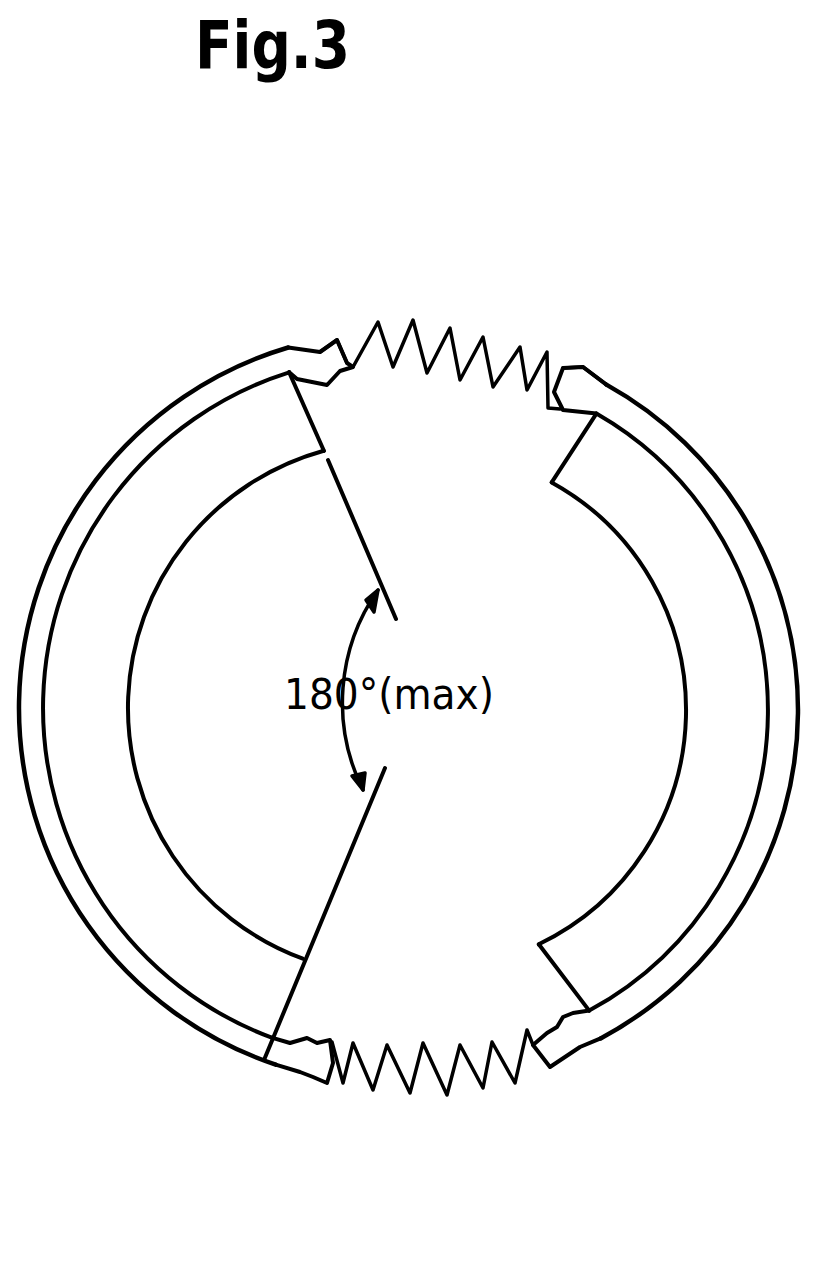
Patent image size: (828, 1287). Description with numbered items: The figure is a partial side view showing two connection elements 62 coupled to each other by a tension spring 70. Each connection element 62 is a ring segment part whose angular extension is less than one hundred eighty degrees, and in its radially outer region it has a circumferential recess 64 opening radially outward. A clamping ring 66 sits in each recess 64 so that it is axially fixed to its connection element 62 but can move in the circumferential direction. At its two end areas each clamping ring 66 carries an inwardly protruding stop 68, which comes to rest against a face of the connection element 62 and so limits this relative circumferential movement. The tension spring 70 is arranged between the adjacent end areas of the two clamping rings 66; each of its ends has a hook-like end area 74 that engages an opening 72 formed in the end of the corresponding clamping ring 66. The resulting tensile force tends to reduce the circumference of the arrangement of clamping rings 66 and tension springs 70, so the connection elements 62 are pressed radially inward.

The connection element 62 is at (588, 508).
The circumferential recess 64 is at (130, 462).
The clamping ring 66 is at (223, 373).
The stop 68 is at (331, 384).
The tension spring 70 is at (460, 347).
The opening 72 is at (336, 338).
The hook-like end area 74 is at (341, 338).